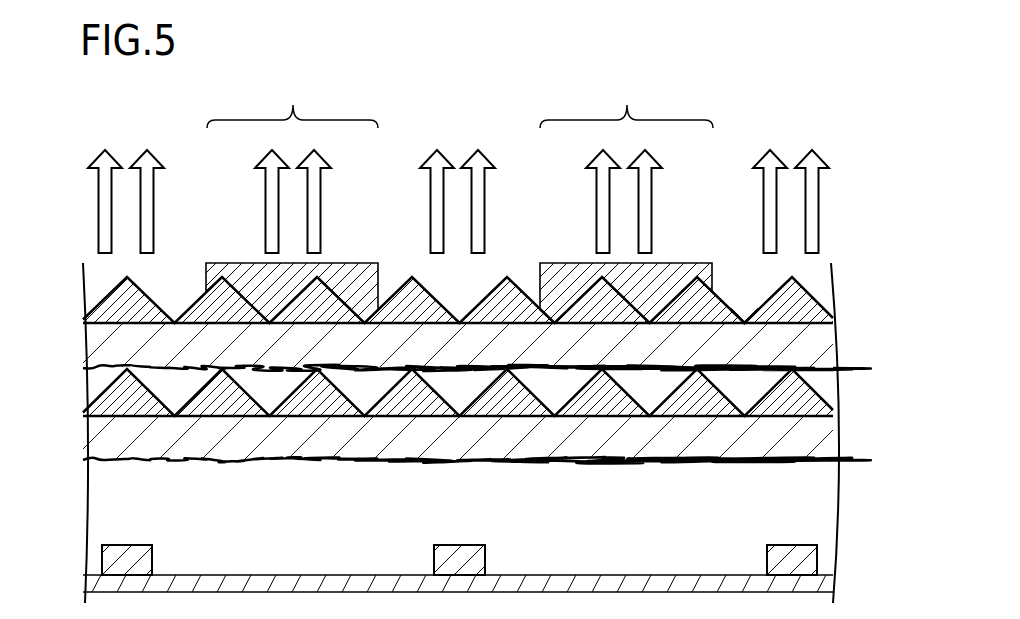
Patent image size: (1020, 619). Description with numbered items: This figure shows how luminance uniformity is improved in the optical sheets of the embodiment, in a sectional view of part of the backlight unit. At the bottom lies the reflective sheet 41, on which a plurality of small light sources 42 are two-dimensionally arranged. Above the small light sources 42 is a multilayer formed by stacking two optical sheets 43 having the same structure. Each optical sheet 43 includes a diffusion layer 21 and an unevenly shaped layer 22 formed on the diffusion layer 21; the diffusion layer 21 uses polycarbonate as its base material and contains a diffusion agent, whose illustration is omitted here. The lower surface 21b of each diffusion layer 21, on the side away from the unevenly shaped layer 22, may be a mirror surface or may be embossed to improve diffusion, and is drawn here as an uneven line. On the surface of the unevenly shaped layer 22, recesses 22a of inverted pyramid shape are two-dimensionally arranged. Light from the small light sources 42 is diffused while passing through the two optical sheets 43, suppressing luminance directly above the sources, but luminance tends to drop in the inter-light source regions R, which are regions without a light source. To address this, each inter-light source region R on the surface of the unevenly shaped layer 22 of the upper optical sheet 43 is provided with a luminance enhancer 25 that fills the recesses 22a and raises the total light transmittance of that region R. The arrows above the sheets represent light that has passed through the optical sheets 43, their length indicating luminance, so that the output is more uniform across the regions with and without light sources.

The inter-light source region R is at (460, 96).
The unevenly shaped layer 22 is at (803, 307).
The recesses 22a is at (747, 302).
The luminance enhancer 25 is at (236, 262).
The optical sheet 43 is at (78, 417).
The diffusion layer 21 is at (803, 347).
The surface of the diffusion layer 21b is at (808, 370).
The small light sources 42 is at (812, 558).
The reflective sheet 41 is at (827, 583).